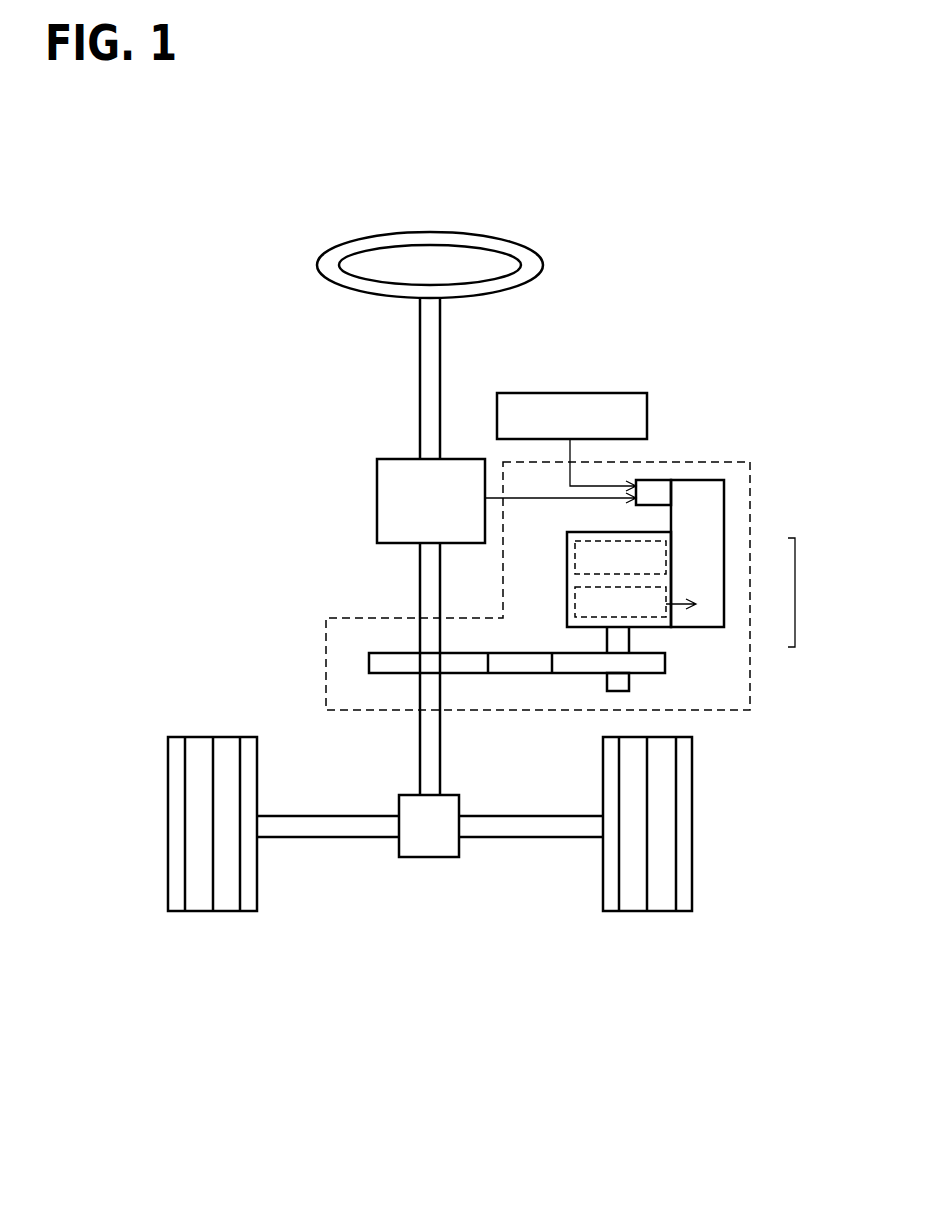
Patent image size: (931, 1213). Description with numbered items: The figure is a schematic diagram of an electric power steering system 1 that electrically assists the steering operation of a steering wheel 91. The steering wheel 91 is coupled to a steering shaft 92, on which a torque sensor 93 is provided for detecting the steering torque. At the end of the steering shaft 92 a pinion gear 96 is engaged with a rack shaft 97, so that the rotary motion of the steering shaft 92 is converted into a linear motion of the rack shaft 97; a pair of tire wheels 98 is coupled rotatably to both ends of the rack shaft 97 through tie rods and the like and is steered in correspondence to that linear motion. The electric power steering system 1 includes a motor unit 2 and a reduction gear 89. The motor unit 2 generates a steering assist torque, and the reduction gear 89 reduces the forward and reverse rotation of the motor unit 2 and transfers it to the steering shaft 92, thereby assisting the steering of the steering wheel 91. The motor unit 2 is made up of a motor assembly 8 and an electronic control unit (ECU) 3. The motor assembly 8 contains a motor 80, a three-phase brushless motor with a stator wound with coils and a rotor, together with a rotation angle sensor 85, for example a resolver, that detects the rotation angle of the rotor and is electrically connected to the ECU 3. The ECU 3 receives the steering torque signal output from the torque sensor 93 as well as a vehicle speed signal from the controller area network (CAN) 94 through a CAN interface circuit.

The electric power steering system 1 is at (750, 490).
The motor unit 2 is at (801, 592).
The electronic control unit (ECU) 3 is at (724, 548).
The motor assembly 8 is at (655, 627).
The motor 80 is at (575, 556).
The rotation angle sensor 85 is at (575, 603).
The reduction gear 89 is at (665, 665).
The steering wheel 91 is at (318, 264).
The steering shaft 92 is at (420, 356).
The torque sensor 93 is at (377, 508).
The controller area network (CAN) 94 is at (565, 393).
The pinion gear 96 is at (420, 857).
The rack shaft 97 is at (320, 837).
The tire wheels 98 is at (228, 911).